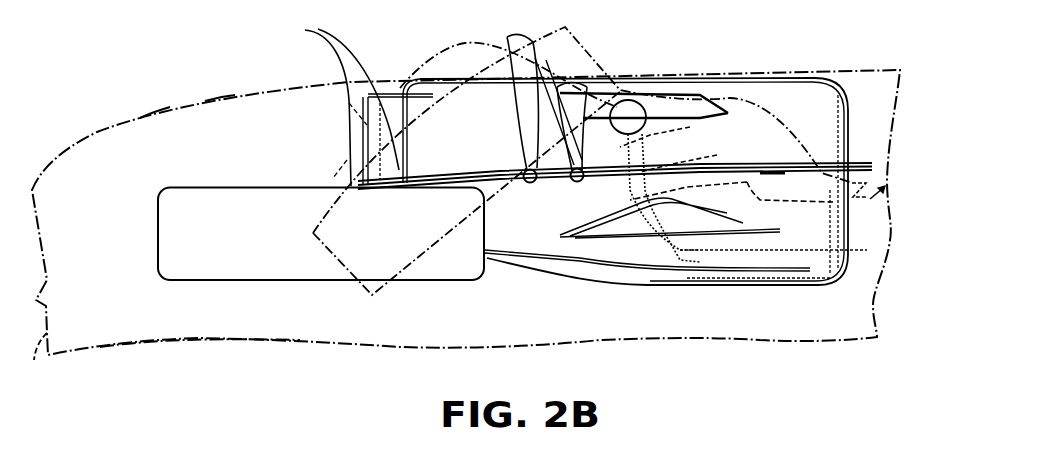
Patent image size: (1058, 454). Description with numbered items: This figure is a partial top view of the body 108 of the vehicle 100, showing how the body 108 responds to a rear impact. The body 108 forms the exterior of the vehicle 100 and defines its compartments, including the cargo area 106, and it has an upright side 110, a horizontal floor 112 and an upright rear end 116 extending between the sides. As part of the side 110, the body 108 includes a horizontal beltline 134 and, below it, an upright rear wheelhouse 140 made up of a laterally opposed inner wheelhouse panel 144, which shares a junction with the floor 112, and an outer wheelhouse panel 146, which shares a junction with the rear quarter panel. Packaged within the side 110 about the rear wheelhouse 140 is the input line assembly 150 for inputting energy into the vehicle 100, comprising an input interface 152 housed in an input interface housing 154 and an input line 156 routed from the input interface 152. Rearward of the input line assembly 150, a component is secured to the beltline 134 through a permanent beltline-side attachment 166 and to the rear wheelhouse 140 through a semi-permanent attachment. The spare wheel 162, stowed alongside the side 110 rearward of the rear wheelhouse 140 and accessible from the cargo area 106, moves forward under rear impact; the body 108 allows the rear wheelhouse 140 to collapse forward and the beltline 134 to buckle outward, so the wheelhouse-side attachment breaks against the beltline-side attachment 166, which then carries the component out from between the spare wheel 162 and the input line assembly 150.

The vehicle 100 is at (98, 126).
The cargo area 106 is at (150, 320).
The body 108 is at (160, 109).
The side 110 is at (218, 99).
The floor 112 is at (290, 134).
The rear end 116 is at (34, 360).
The beltline 134 is at (437, 50).
The rear wheelhouse 140 is at (852, 137).
The inner wheelhouse panel 144 is at (856, 182).
The outer wheelhouse panel 146 is at (850, 160).
The input line assembly 150 is at (717, 155).
The input interface 152 is at (690, 127).
The input interface housing 154 is at (725, 98).
The input line 156 is at (747, 182).
The spare wheel 162 is at (350, 102).
The beltline-side attachment 166 is at (507, 37).